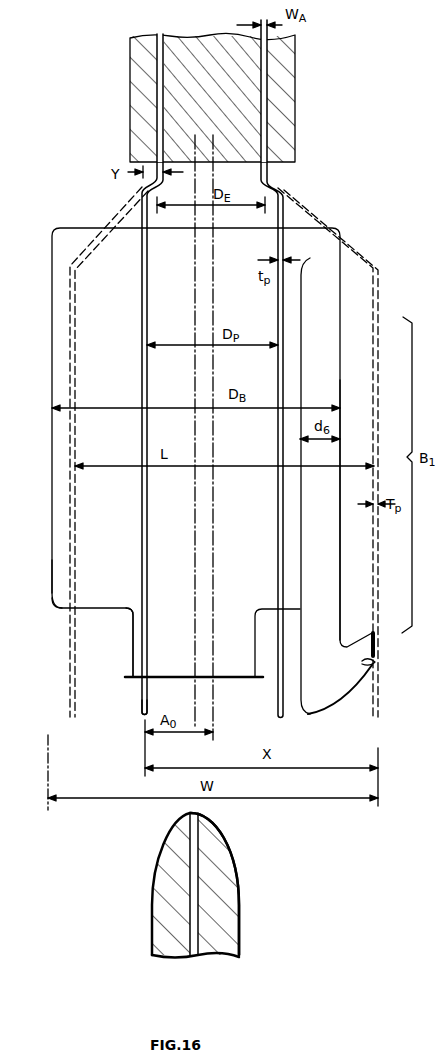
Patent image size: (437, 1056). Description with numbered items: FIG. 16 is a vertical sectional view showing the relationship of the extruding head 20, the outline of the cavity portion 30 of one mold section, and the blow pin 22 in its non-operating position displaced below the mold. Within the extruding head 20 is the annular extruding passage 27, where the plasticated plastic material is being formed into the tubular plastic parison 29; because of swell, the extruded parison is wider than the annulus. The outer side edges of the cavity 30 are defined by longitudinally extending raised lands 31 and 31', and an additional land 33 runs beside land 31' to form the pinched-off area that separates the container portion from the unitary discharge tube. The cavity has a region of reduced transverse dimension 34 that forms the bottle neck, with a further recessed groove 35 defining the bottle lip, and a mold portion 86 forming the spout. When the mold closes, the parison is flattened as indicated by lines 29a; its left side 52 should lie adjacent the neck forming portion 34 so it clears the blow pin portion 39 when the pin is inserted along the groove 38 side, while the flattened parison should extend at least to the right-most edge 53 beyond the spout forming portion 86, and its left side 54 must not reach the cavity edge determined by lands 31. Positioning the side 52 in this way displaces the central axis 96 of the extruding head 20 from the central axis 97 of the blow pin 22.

The extruding head 20 is at (339, 114).
The blow pin 22 is at (220, 933).
The annular extruding passage 27 is at (267, 68).
The plastic parison 29 is at (283, 191).
The flattened parison lines 29a is at (380, 308).
The recessed cavity portion 30 is at (52, 378).
The raised land 31 is at (78, 611).
The raised land 31' is at (375, 510).
The additional land 33 is at (302, 353).
The region of reduced transverse dimension 34 is at (133, 646).
The recessed groove 35 is at (56, 610).
The groove 38 is at (192, 877).
The blow pin portion 39 is at (220, 870).
The left side of parison 52 is at (140, 702).
The right-most edge 53 is at (374, 665).
The left side of flattened parison 54 is at (72, 297).
The spout forming mold portion 86 is at (328, 712).
The extruding head axis 96 is at (214, 575).
The blow pin axis 97 is at (194, 572).